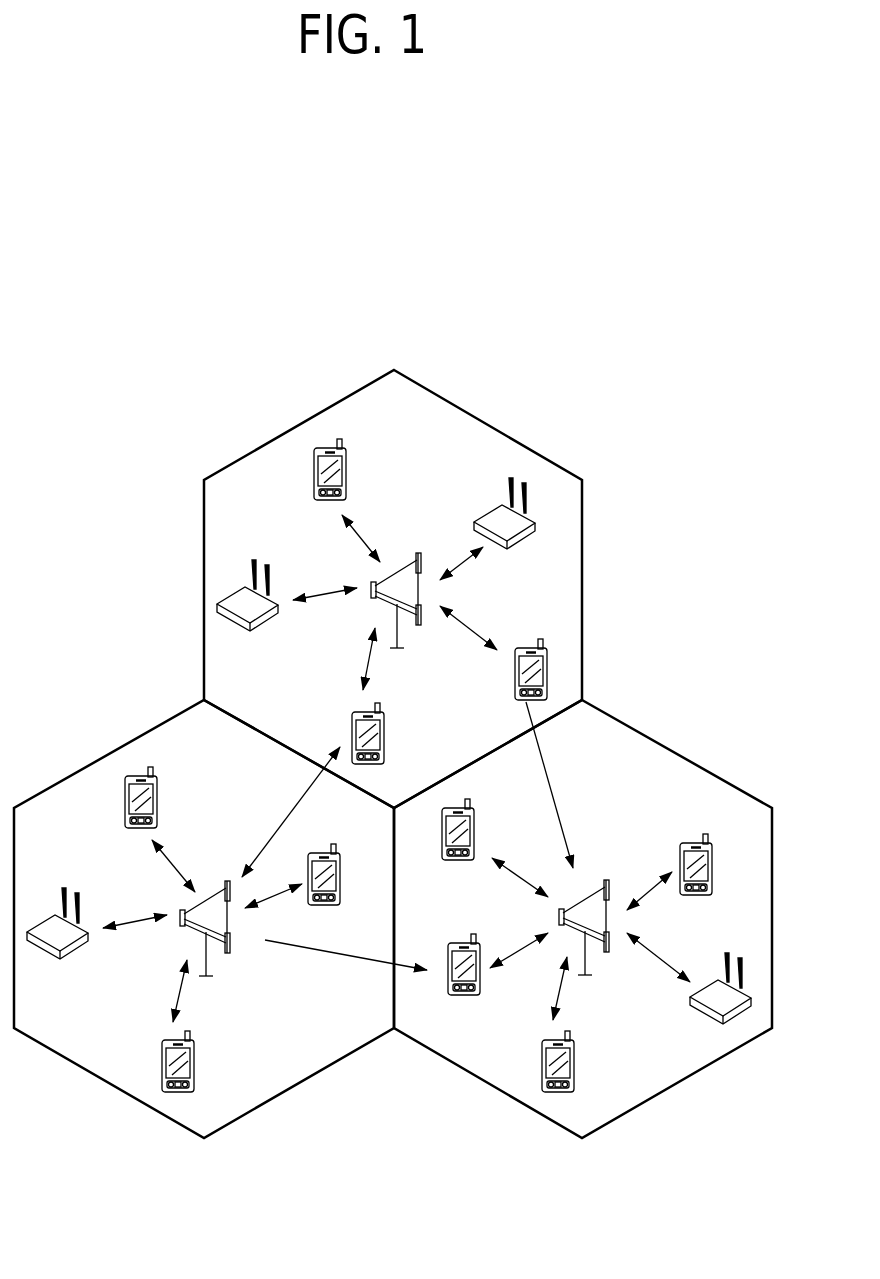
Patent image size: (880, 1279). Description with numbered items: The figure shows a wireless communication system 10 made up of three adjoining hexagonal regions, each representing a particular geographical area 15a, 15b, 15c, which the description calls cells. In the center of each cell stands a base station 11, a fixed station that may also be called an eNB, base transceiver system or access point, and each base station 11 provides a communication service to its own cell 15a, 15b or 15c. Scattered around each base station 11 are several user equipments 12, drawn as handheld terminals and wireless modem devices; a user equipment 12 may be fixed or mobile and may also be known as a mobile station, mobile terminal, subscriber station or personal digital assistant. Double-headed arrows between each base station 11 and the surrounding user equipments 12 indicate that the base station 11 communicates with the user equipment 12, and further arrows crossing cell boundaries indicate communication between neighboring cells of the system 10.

The wireless communication system 10 is at (664, 487).
The base station 11 is at (410, 556).
The user equipment 12 is at (346, 472).
The geographical area (cell) 15a is at (583, 580).
The geographical area (cell) 15b is at (702, 766).
The geographical area (cell) 15c is at (85, 768).